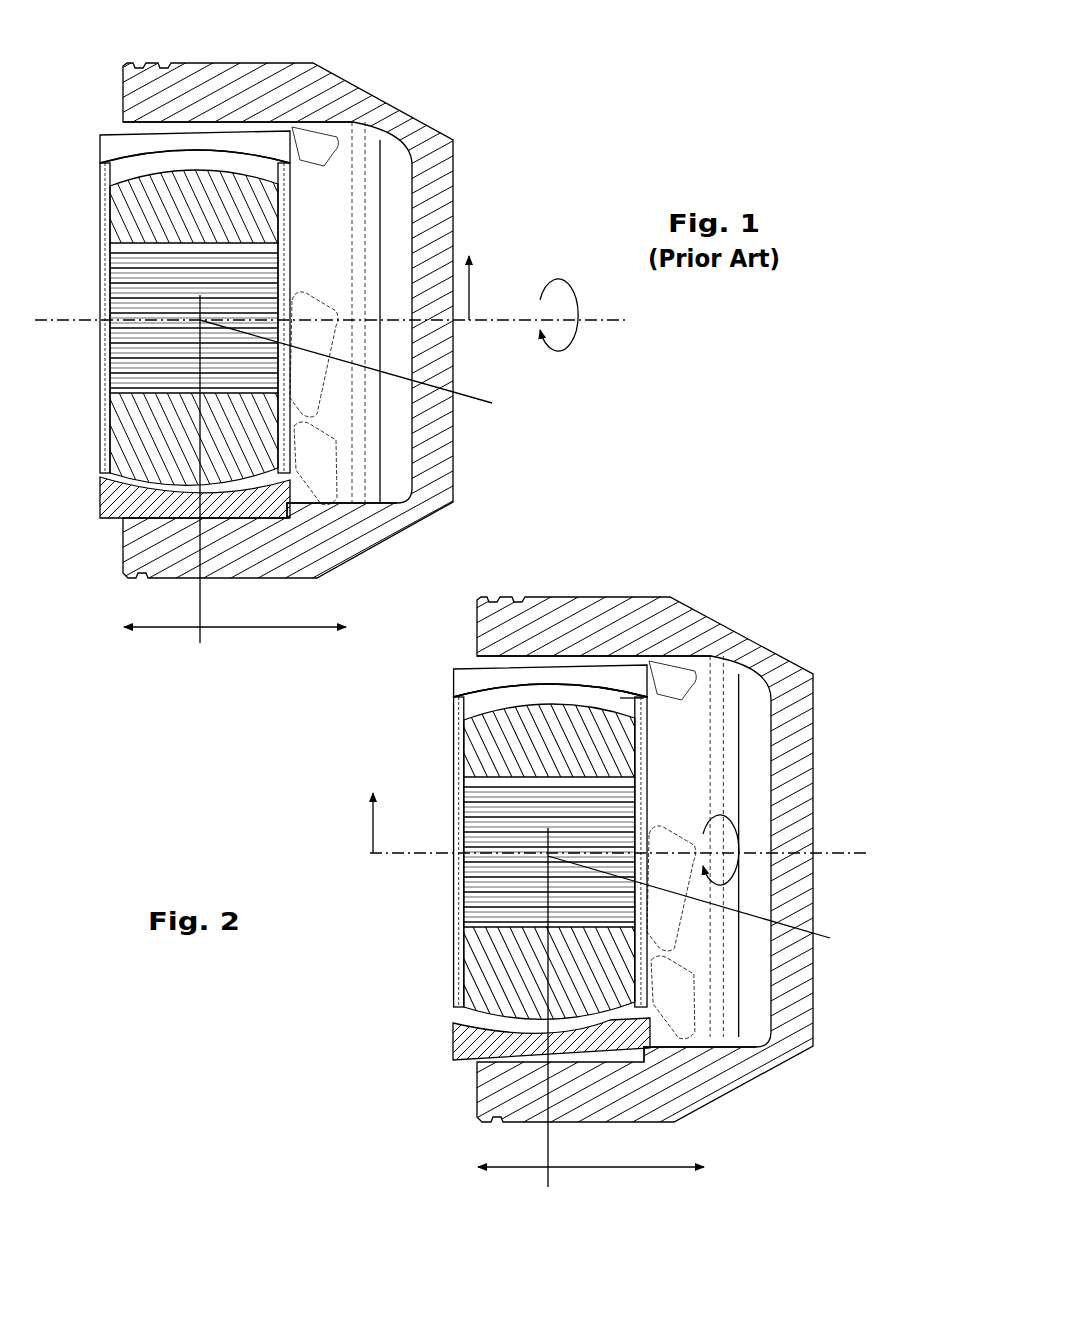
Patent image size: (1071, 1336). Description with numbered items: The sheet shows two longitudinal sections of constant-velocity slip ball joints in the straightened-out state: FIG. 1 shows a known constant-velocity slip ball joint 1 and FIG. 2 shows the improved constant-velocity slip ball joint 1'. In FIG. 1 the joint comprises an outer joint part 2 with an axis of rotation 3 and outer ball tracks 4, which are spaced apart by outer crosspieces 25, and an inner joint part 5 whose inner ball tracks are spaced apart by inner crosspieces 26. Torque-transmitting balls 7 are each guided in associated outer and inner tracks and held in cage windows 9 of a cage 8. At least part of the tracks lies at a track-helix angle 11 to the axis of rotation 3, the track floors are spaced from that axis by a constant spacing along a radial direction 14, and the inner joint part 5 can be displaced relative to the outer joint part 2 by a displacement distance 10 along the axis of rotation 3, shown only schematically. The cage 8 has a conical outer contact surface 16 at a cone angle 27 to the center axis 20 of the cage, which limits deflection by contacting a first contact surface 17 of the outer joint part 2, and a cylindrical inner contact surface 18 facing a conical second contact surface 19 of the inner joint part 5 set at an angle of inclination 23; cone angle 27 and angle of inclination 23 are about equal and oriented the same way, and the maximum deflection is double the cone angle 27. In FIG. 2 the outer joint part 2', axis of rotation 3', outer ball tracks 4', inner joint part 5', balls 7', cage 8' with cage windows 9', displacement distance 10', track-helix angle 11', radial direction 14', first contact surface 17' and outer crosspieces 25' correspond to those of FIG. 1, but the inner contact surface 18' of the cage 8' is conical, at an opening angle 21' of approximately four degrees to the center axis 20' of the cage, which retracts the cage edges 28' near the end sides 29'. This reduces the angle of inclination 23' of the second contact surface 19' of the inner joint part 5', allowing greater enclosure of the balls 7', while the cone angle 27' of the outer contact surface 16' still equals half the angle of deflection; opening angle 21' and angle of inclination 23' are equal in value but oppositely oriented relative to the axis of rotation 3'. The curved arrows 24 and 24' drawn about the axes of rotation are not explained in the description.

In FIG. 1, the constant-velocity slip ball joint 1 is at (327, 294).
In FIG. 1, the outer joint part 2 is at (535, 668).
In FIG. 1, the axis of rotation 3 is at (334, 301).
In FIG. 1, the outer ball tracks 4 is at (416, 145).
In FIG. 1, the inner joint part 5 is at (535, 668).
In FIG. 1, the torque-transmitting balls 7 is at (195, 86).
In FIG. 1, the cage 8 is at (535, 668).
In FIG. 1, the cage windows 9 is at (109, 250).
In FIG. 1, the displacement distance 10 is at (235, 644).
In FIG. 1, the track-helix angle 11 is at (365, 361).
In FIG. 1, the radial direction 14 is at (491, 285).
In FIG. 1, the outer contact surface 16 is at (238, 63).
In FIG. 1, the first contact surface 17 is at (414, 479).
In FIG. 1, the inner contact surface 18 is at (408, 315).
In FIG. 1, the second contact surface 19 is at (535, 668).
In FIG. 1, the center axis of the cage 20 is at (128, 463).
In FIG. 1, the angle of inclination 23 is at (109, 458).
In FIG. 1, the rotation 24 is at (572, 325).
In FIG. 1, the outer crosspieces 25 is at (434, 313).
In FIG. 1, the inner crosspieces 26 is at (130, 188).
In FIG. 1, the cone angle 27 is at (535, 668).
In FIG. 2, the constant-velocity slip ball joint 1' is at (674, 830).
In FIG. 2, the outer joint part 2' is at (535, 668).
In FIG. 2, the axis of rotation 3' is at (620, 836).
In FIG. 2, the housing top wall 4' is at (749, 676).
In FIG. 2, the inner joint part 5' is at (535, 935).
In FIG. 2, the balls 7' is at (550, 622).
In FIG. 2, the cage 8' is at (535, 935).
In FIG. 2, the piezo stack 9' is at (531, 747).
In FIG. 2, the diameter 10' is at (591, 1184).
In FIG. 2, the tilt angle 11' is at (713, 897).
In FIG. 2, the radius 14' is at (398, 821).
In FIG. 2, the outer contact surface 16' is at (594, 601).
In FIG. 2, the housing bottom 17' is at (776, 1022).
In FIG. 2, the inner contact surface 18' is at (765, 727).
In FIG. 2, the second contact surface 19' is at (535, 668).
In FIG. 2, the center axis of the cage 20' is at (468, 1007).
In FIG. 2, the opening angle 21' is at (400, 1030).
In FIG. 2, the angle of inclination 23' is at (436, 733).
In FIG. 2, the rotation 24' is at (736, 862).
In FIG. 2, the cavity 25' is at (693, 847).
In FIG. 2, the cone angle 27' is at (535, 935).
In FIG. 2, the cage edges 28' is at (629, 687).
In FIG. 2, the end sides 29' is at (639, 852).